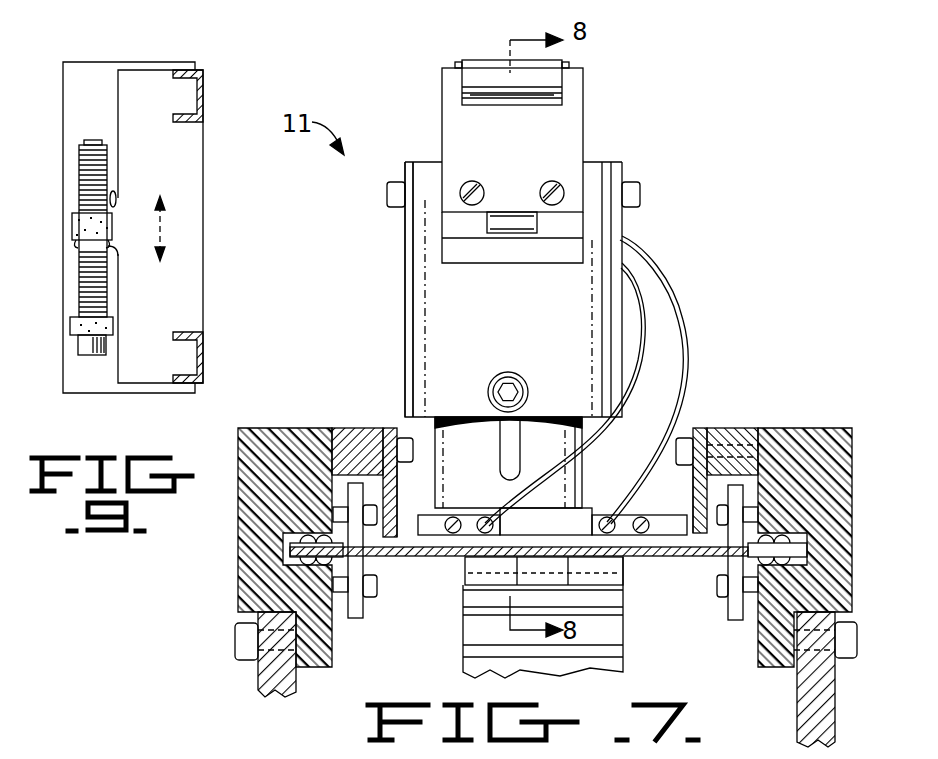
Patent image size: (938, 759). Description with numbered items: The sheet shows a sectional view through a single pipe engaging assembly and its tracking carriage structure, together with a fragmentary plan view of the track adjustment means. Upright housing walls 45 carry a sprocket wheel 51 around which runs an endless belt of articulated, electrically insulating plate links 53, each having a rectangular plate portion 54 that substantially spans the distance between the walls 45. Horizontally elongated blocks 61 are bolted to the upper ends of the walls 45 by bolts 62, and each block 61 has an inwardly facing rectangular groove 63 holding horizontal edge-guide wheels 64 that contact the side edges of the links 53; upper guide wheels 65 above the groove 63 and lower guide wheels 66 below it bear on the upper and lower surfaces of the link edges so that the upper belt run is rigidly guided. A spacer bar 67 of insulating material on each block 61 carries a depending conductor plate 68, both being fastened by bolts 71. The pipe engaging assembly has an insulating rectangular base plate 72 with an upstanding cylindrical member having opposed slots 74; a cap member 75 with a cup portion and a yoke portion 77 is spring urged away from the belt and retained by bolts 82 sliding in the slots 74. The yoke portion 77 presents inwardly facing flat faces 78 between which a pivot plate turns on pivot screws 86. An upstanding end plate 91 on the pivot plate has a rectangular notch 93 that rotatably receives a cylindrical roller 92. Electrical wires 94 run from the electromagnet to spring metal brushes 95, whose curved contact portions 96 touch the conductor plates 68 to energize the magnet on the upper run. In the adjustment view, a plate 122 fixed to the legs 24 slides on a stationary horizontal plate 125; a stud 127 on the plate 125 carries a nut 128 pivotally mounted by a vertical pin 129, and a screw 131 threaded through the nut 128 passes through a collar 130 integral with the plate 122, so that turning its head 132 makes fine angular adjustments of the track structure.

In FIG. 9, the legs 24 is at (204, 110).
In FIG. 7, the housing walls 45 is at (262, 692).
In FIG. 7, the sprocket wheel 51 is at (470, 634).
In FIG. 7, the plate links 53 is at (463, 558).
In FIG. 7, the rectangular plate portion 54 is at (650, 557).
In FIG. 7, the blocks 61 is at (238, 441).
In FIG. 7, the bolts 62 is at (240, 640).
In FIG. 7, the rectangular groove 63 is at (288, 549).
In FIG. 7, the horizontal edge-guide wheels 64 is at (296, 551).
In FIG. 7, the upper guide wheels 65 is at (340, 434).
In FIG. 7, the lower guide wheels 66 is at (362, 620).
In FIG. 7, the spacer bar 67 is at (385, 430).
In FIG. 7, the conductor plate 68 is at (402, 440).
In FIG. 7, the bolts 71 is at (413, 444).
In FIG. 7, the rectangular base plate 72 is at (565, 520).
In FIG. 7, the slots 74 is at (512, 452).
In FIG. 7, the cap member 75 is at (413, 313).
In FIG. 7, the yoke portion 77 is at (405, 246).
In FIG. 7, the flat faces 78 is at (575, 240).
In FIG. 7, the bolts 82 is at (518, 386).
In FIG. 7, the pivot screws 86 is at (387, 191).
In FIG. 7, the end plate 91 is at (583, 126).
In FIG. 7, the cylindrical roller 92 is at (476, 60).
In FIG. 7, the rectangular notch 93 is at (506, 98).
In FIG. 7, the electrical wires 94 is at (680, 362).
In FIG. 7, the spring metal brushes 95 is at (622, 512).
In FIG. 7, the curved contact portion 96 is at (400, 530).
In FIG. 9, the plate 122 is at (198, 298).
In FIG. 9, the horizontal plate 125 is at (167, 386).
In FIG. 9, the stud 127 is at (113, 207).
In FIG. 9, the nut 128 is at (72, 216).
In FIG. 9, the vertical pin 129 is at (72, 249).
In FIG. 9, the collar 130 is at (70, 334).
In FIG. 9, the screw 131 is at (78, 286).
In FIG. 9, the head 132 is at (78, 351).